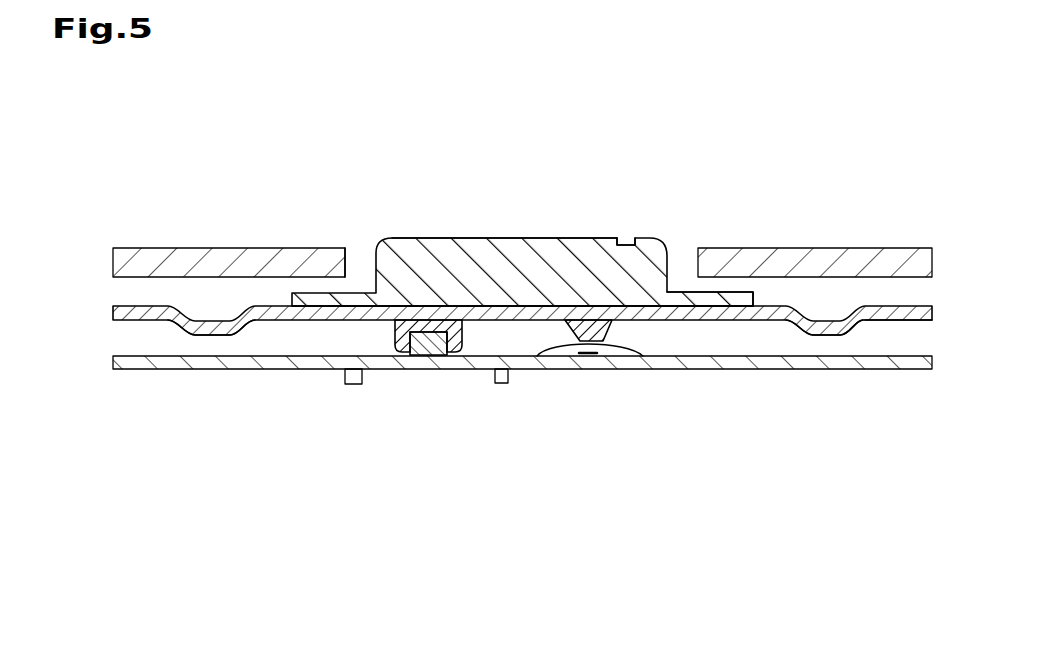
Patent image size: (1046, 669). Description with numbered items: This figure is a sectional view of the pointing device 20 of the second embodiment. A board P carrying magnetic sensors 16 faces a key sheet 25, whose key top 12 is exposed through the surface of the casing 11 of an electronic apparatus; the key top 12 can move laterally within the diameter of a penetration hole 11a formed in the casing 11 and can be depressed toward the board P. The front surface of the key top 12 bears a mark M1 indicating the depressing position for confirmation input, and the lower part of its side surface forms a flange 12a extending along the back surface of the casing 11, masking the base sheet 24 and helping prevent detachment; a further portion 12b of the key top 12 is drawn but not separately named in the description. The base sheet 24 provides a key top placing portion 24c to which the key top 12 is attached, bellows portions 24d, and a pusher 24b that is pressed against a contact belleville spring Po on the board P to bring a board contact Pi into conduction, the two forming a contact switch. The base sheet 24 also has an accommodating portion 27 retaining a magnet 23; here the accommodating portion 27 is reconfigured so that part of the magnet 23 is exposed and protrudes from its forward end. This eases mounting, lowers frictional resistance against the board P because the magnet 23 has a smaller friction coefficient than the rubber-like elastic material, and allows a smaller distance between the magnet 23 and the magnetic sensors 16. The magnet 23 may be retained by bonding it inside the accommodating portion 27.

The pointing device 20 is at (645, 170).
The casing 11 is at (256, 248).
The penetration hole 11a is at (352, 248).
The key top 12 is at (421, 238).
The flange 12a is at (686, 292).
The upper surface of body 12b is at (548, 238).
The mark M1 is at (628, 237).
The base sheet 24 is at (172, 321).
The key top placing portion 24c is at (500, 306).
The bellows portions 24d is at (248, 322).
The pusher 24b is at (574, 338).
The key sheet 25 is at (885, 330).
The accommodating portion 27 is at (397, 338).
The magnet 23 is at (432, 345).
The board P is at (132, 370).
The magnetic sensors 16 is at (345, 380).
The contact belleville spring Po is at (640, 348).
The board contact Pi is at (598, 355).